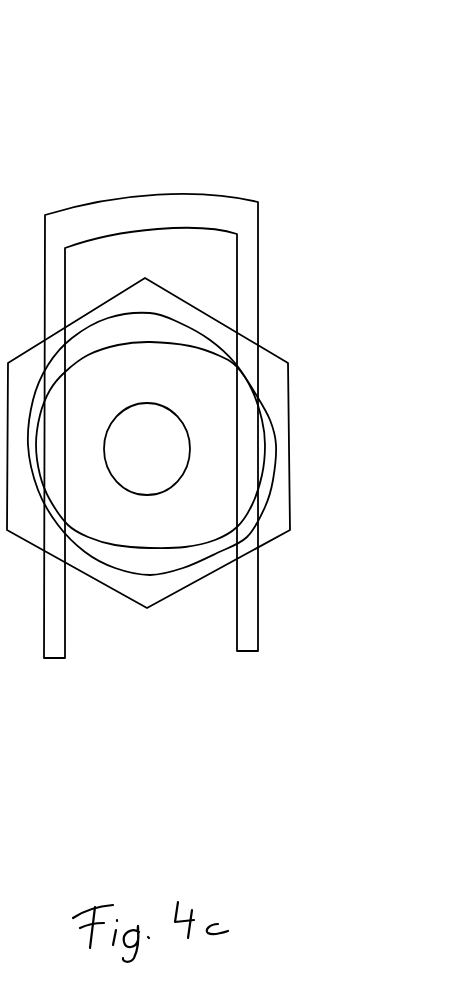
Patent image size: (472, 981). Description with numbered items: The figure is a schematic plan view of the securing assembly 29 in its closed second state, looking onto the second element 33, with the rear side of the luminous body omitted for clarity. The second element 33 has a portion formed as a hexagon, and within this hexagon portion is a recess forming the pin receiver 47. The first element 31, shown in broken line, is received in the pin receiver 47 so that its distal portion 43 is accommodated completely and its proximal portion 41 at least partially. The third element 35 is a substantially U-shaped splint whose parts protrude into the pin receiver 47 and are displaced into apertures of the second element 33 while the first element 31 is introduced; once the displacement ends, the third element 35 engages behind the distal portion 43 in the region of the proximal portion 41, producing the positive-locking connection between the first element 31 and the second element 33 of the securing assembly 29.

The securing assembly 29 is at (293, 110).
The first element 31 is at (115, 545).
The second element 33 is at (290, 415).
The third element 35 is at (259, 258).
The proximal portion 41 is at (162, 466).
The distal portion 43 is at (163, 390).
The pin receiver 47 is at (163, 562).